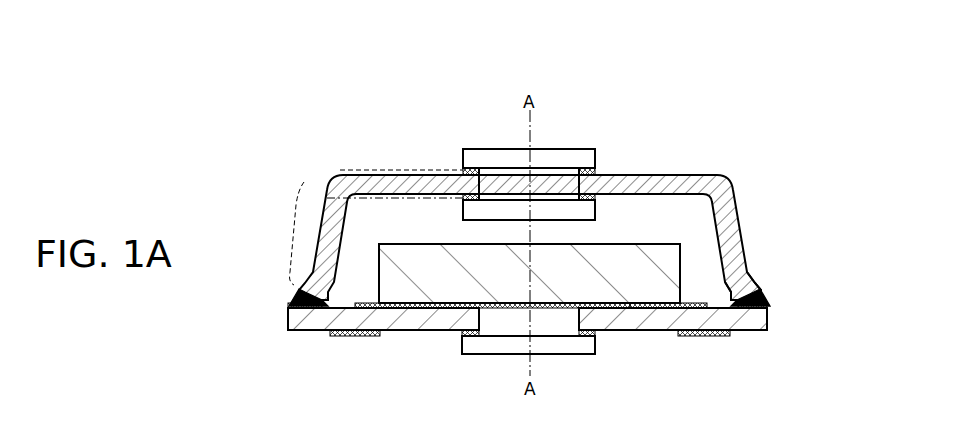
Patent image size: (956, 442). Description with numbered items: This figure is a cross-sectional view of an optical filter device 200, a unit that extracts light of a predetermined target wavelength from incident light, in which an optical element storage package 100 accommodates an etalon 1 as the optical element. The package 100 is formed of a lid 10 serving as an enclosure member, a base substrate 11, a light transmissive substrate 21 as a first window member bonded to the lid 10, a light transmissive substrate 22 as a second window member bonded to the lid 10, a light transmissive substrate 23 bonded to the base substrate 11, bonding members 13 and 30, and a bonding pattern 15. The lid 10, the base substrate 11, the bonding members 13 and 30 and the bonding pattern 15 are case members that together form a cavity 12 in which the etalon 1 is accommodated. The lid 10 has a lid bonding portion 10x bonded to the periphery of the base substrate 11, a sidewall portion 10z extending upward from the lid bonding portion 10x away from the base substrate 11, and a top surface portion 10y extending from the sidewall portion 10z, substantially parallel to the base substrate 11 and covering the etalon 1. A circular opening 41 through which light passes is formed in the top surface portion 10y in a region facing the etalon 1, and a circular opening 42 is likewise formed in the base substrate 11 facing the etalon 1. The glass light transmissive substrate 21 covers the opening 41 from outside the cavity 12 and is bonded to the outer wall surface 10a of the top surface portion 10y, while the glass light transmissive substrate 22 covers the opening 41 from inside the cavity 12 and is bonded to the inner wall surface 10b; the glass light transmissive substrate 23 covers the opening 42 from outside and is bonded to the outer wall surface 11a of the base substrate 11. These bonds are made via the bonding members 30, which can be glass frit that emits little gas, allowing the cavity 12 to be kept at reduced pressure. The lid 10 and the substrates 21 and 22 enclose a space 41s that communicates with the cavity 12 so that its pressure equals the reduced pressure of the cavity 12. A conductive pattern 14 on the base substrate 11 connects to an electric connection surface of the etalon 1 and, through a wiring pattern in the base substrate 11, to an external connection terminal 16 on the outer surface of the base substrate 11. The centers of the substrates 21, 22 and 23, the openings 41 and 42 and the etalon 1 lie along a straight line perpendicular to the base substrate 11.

The etalon 1 is at (503, 297).
The lid 10 is at (425, 190).
The outer wall surface 10a is at (377, 173).
The inner wall surface 10b is at (393, 200).
The lid bonding portion 10x is at (304, 334).
The top surface portion 10y is at (350, 170).
The sidewall portion 10z is at (292, 230).
The base substrate 11 is at (413, 318).
The outer wall surface 11a is at (390, 334).
The cavity 12 is at (678, 215).
The bonding member 13 is at (765, 292).
The conductive pattern 14 is at (658, 309).
The bonding pattern 15 is at (771, 305).
The external connection terminal 16 is at (360, 337).
The light transmissive substrate 21 is at (493, 165).
The light transmissive substrate 22 is at (540, 208).
The light transmissive substrate 23 is at (520, 345).
The bonding member 30 is at (598, 172).
The opening 41 is at (563, 177).
The space 41s is at (507, 175).
The opening 42 is at (578, 320).
The optical element storage package 100 is at (775, 131).
The optical filter device 200 is at (828, 60).